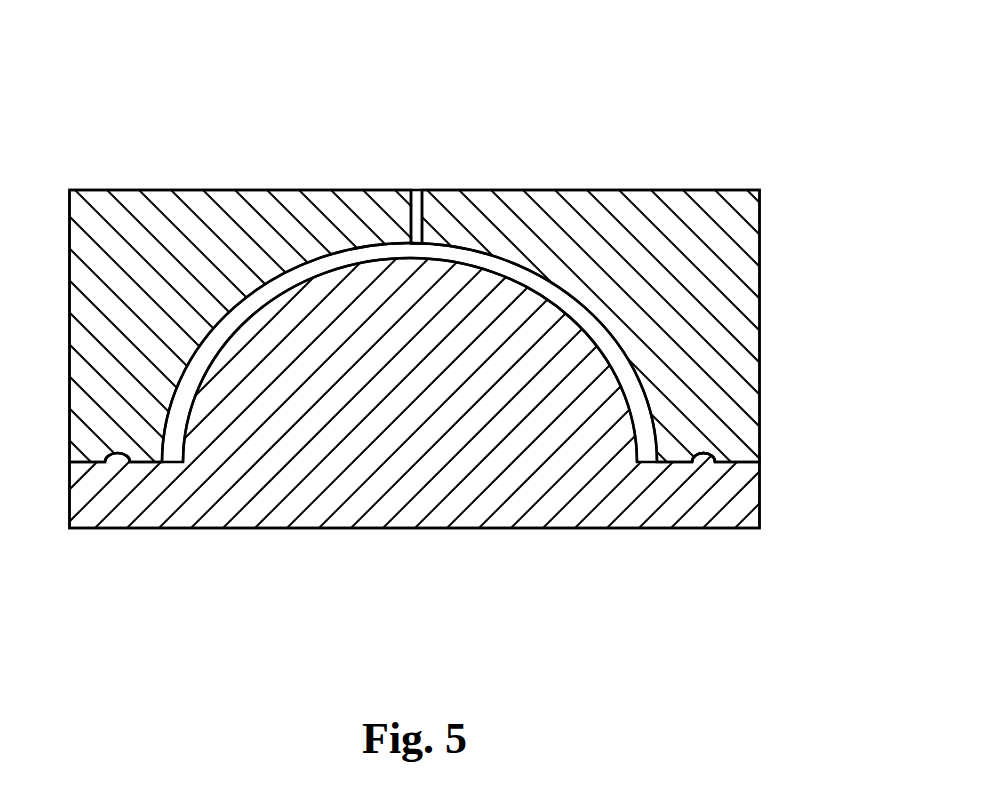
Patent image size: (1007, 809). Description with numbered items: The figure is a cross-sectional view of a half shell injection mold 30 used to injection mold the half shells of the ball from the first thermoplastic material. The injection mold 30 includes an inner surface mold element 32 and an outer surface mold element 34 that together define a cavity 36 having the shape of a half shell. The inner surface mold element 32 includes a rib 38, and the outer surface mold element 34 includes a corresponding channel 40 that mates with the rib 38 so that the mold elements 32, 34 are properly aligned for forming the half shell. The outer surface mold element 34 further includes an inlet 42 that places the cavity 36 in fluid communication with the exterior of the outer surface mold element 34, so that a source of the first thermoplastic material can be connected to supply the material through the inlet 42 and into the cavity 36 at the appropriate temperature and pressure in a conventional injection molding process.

The half shell injection mold 30 is at (607, 95).
The inner surface mold element 32 is at (525, 530).
The outer surface mold element 34 is at (673, 190).
The cavity 36 is at (300, 277).
The rib 38 is at (703, 464).
The channel 40 is at (702, 456).
The inlet 42 is at (435, 193).